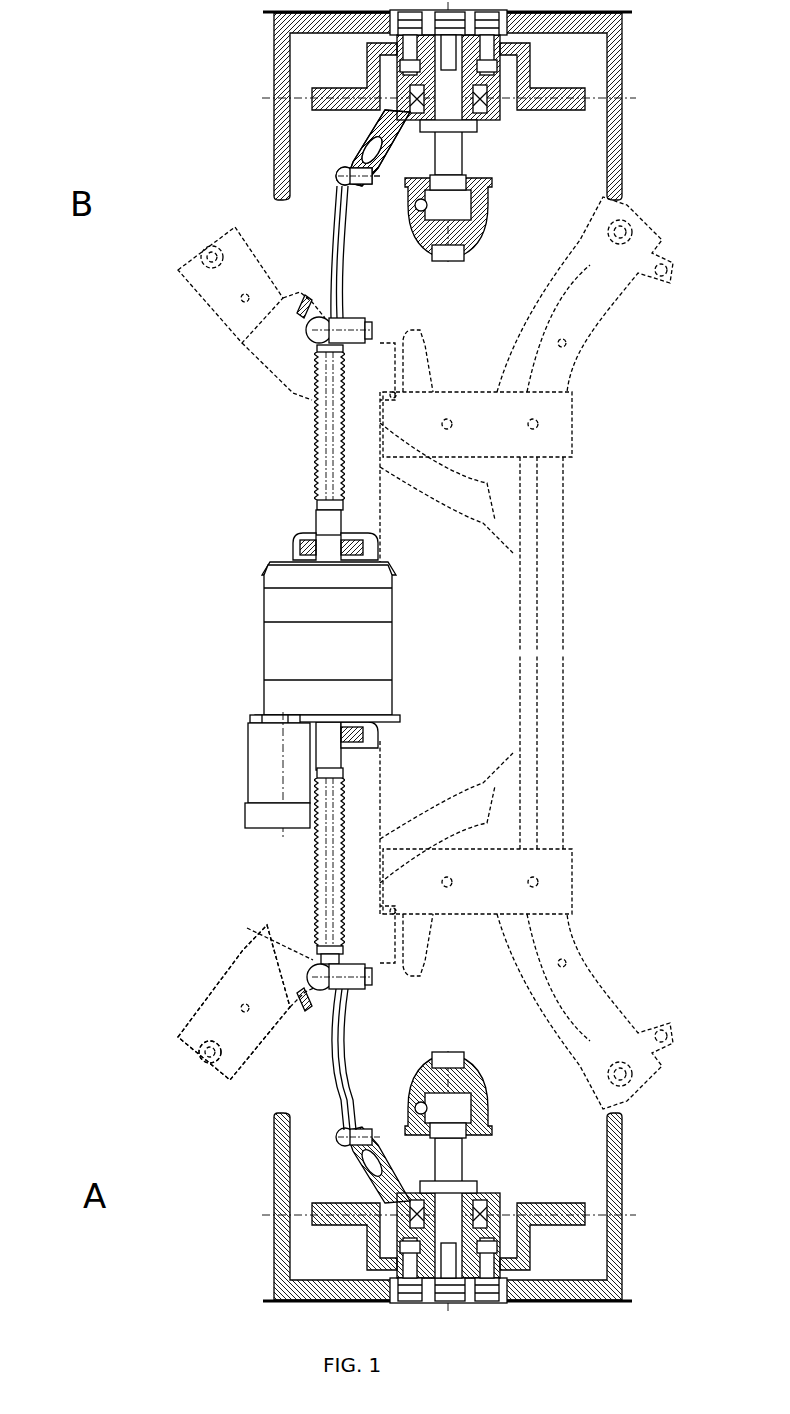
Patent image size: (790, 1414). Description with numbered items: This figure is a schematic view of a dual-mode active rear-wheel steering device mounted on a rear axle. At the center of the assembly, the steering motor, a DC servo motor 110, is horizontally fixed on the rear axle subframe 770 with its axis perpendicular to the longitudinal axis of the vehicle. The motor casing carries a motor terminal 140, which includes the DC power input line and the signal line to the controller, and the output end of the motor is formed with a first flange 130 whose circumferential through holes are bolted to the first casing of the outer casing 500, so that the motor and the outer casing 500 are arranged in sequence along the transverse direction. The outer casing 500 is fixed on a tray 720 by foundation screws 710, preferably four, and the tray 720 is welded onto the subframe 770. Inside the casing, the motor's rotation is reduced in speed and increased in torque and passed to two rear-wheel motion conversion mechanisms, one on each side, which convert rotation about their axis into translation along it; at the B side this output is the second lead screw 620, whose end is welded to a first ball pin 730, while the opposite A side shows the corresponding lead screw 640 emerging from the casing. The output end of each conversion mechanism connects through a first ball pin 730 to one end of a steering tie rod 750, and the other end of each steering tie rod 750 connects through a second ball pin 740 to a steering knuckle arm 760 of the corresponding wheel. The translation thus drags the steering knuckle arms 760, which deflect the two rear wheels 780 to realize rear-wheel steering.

The servo motor 110 is at (263, 797).
The first flange 130 is at (255, 718).
The motor terminal 140 is at (243, 815).
The outer casing 500 is at (265, 573).
The second lead screw 620 is at (327, 493).
The second lead screw 640 is at (327, 837).
The foundation screws 710 is at (365, 540).
The tray 720 is at (293, 537).
The first ball pin 730 is at (240, 1063).
The second ball pin 740 is at (337, 1128).
The steering tie rods 750 is at (333, 247).
The steering knuckle arms 760 is at (378, 120).
The rear axle subframe 770 is at (267, 960).
The rear wheels 780 is at (285, 1263).